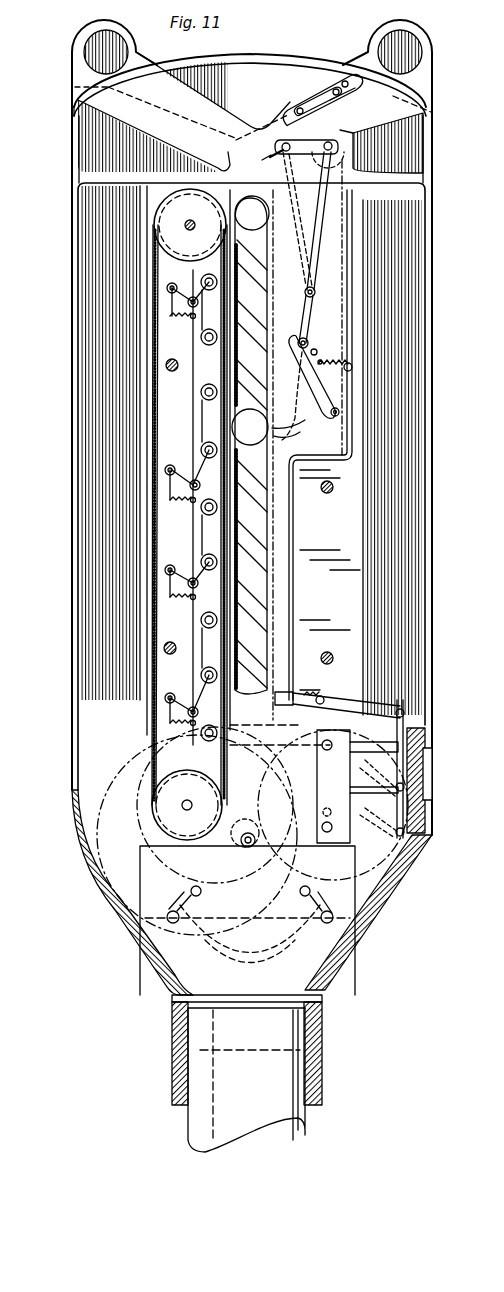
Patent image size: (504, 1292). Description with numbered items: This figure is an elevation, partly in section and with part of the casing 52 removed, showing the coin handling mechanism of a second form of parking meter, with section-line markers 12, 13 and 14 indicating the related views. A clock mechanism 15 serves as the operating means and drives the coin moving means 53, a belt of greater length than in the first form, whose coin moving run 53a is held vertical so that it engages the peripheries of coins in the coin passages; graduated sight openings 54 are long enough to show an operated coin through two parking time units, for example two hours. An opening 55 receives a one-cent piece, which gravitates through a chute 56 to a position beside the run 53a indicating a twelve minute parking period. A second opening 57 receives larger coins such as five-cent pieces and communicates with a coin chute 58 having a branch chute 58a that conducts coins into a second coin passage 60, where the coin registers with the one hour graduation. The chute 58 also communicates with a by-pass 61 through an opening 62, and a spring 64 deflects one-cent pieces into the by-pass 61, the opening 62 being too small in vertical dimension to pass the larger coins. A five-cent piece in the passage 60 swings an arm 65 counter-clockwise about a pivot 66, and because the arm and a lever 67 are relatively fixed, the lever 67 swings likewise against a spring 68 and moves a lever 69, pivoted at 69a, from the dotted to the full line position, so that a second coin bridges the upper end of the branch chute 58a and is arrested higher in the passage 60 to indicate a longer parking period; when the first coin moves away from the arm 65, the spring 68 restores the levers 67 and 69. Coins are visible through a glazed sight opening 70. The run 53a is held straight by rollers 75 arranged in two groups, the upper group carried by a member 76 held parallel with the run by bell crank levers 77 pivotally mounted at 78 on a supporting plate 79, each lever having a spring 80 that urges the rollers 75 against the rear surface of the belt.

The 12 minute parking period indication 12 is at (234, 38).
The section line 13- 13 is at (290, 1068).
The section line 14- 14 is at (50, 284).
The clock mechanism 15 is at (97, 867).
The casing 52 is at (428, 620).
The coin moving means 53 is at (200, 544).
The coin moving run 53a is at (215, 528).
The graduated sight openings 54 is at (266, 540).
The opening 55 is at (118, 45).
The chute 56 is at (74, 98).
The second opening 57 is at (408, 44).
The coin chute 58 is at (314, 104).
The branch chute 58a is at (325, 225).
The second coin passage 60 is at (263, 612).
The by-pass 61 is at (291, 112).
The opening 62 is at (432, 112).
The spring 64 is at (330, 96).
The arm 65 is at (296, 399).
The pivot 66 is at (340, 410).
The lever 67 is at (325, 400).
The spring 68 is at (346, 363).
The lever 69 is at (318, 252).
The pivot 69a is at (381, 143).
The glazed sight opening 70 is at (316, 292).
The rollers 75 is at (202, 392).
The member 76 is at (200, 412).
The bell crank levers 77 is at (190, 470).
The pivot 78 is at (184, 283).
The supporting plate 79 is at (148, 412).
The spring 80 is at (178, 320).